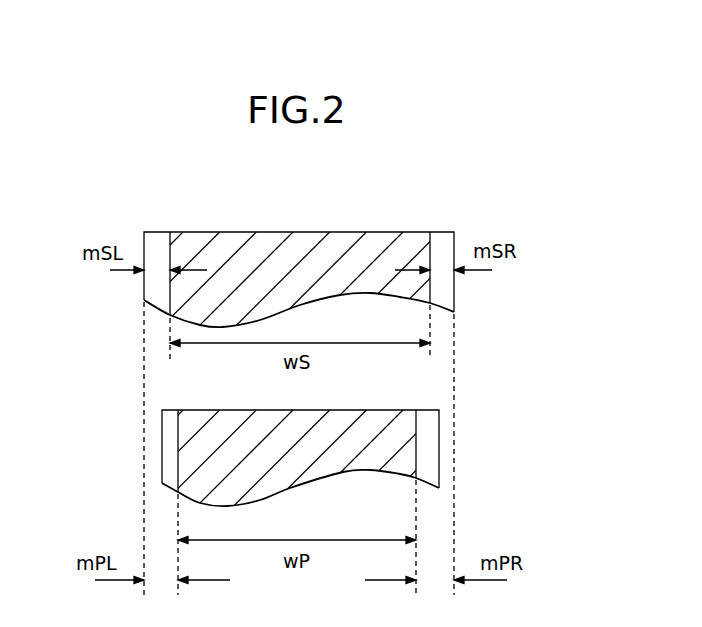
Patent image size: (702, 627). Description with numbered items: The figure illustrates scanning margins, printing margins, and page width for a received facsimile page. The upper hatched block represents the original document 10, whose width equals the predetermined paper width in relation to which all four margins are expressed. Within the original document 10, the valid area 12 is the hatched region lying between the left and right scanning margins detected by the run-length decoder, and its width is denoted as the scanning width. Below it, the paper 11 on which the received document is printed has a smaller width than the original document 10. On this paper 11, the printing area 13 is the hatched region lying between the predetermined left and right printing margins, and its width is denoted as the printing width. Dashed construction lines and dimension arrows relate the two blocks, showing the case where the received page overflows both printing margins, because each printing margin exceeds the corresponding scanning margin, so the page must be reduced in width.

The original document 10 is at (235, 232).
The valid area 12 is at (336, 248).
The paper 11 is at (237, 410).
The printing area 13 is at (365, 428).